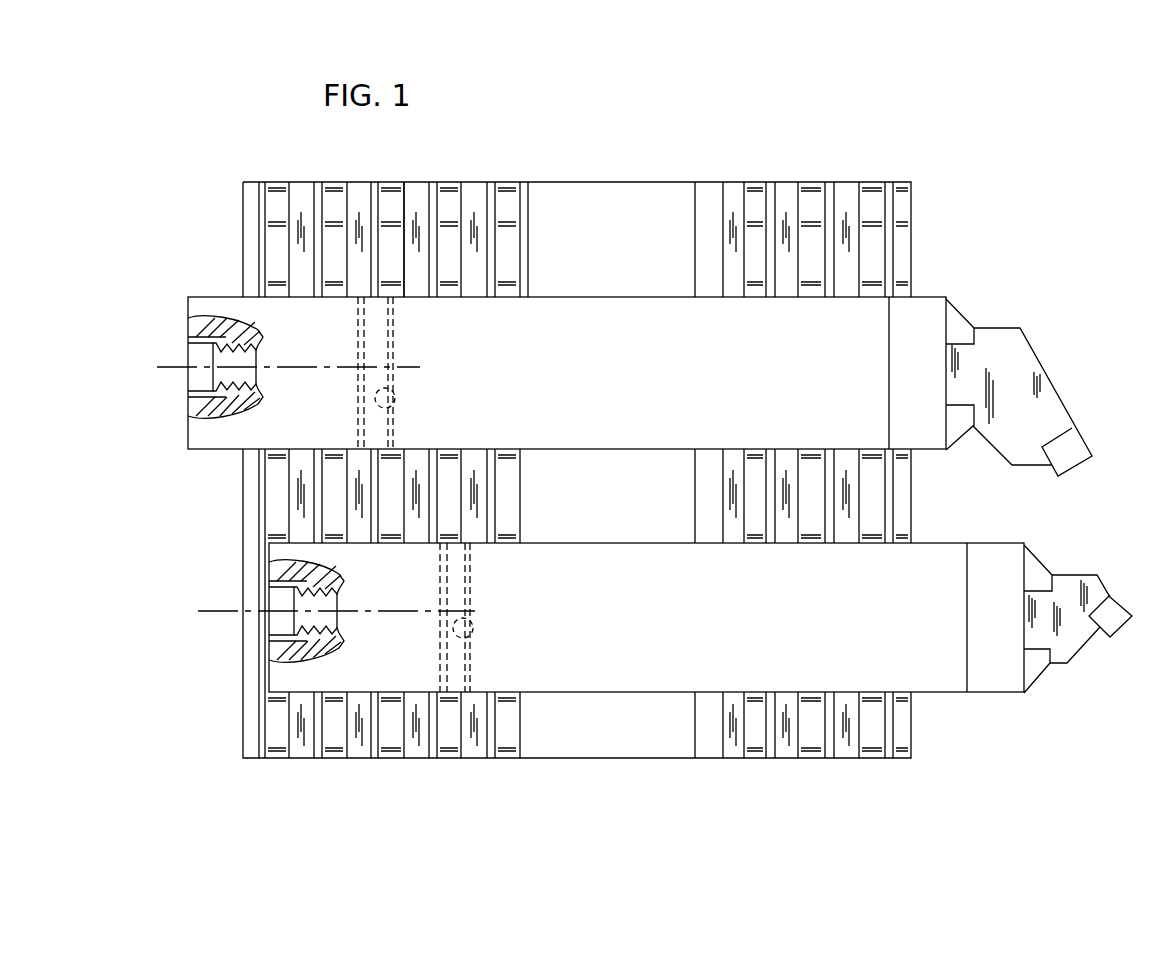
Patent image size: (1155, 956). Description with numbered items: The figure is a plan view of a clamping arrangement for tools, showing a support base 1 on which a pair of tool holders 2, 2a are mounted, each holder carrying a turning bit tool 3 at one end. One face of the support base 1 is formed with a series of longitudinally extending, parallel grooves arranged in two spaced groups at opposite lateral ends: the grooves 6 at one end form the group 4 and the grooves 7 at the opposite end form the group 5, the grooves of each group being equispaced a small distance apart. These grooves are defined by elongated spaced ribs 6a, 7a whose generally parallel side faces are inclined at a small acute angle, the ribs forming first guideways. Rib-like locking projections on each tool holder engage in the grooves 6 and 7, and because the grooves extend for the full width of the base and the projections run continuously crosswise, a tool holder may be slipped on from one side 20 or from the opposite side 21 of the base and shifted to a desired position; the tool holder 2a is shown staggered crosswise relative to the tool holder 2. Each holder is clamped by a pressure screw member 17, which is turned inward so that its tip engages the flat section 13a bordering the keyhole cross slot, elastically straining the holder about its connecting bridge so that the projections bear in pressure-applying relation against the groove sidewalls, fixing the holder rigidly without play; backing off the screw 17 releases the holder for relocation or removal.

The support base 1 is at (600, 193).
The tool holder 2 is at (529, 668).
The tool holder 2a is at (420, 330).
The turning bit tool 3 is at (1038, 398).
The group of grooves 4 is at (803, 230).
The group of grooves 5 is at (351, 216).
The grooves 6 is at (733, 190).
The ribs 6a is at (760, 190).
The grooves 7 is at (308, 195).
The ribs 7a is at (385, 192).
The flat section 13a is at (393, 402).
The pressure screw member 17 is at (198, 378).
The side of the base 20 is at (698, 759).
The opposite side of the base 21 is at (453, 185).